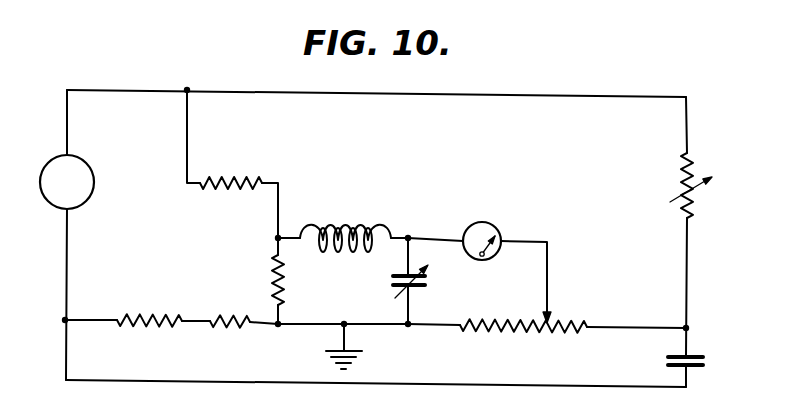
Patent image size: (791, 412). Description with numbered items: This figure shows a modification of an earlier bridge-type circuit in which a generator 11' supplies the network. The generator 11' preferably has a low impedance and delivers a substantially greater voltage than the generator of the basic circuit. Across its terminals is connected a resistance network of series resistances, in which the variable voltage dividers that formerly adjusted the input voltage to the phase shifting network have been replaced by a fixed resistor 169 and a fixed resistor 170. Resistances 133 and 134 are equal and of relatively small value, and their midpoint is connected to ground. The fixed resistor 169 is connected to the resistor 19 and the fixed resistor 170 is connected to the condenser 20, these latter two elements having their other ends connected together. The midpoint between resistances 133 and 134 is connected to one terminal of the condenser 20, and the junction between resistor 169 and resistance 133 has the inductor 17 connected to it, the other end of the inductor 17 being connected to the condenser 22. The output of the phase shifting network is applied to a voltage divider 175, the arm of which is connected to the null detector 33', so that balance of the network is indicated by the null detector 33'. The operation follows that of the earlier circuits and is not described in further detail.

The generator 11' is at (88, 171).
The fixed resistor 169 is at (205, 182).
The inductor 17 is at (318, 229).
The resistance 133 is at (283, 276).
The condenser 22 is at (422, 292).
The null detector 33' is at (502, 226).
The resistor 19 is at (683, 168).
The fixed resistor 170 is at (136, 317).
The resistance 134 is at (226, 317).
The voltage divider 175 is at (534, 334).
The condenser 20 is at (701, 373).